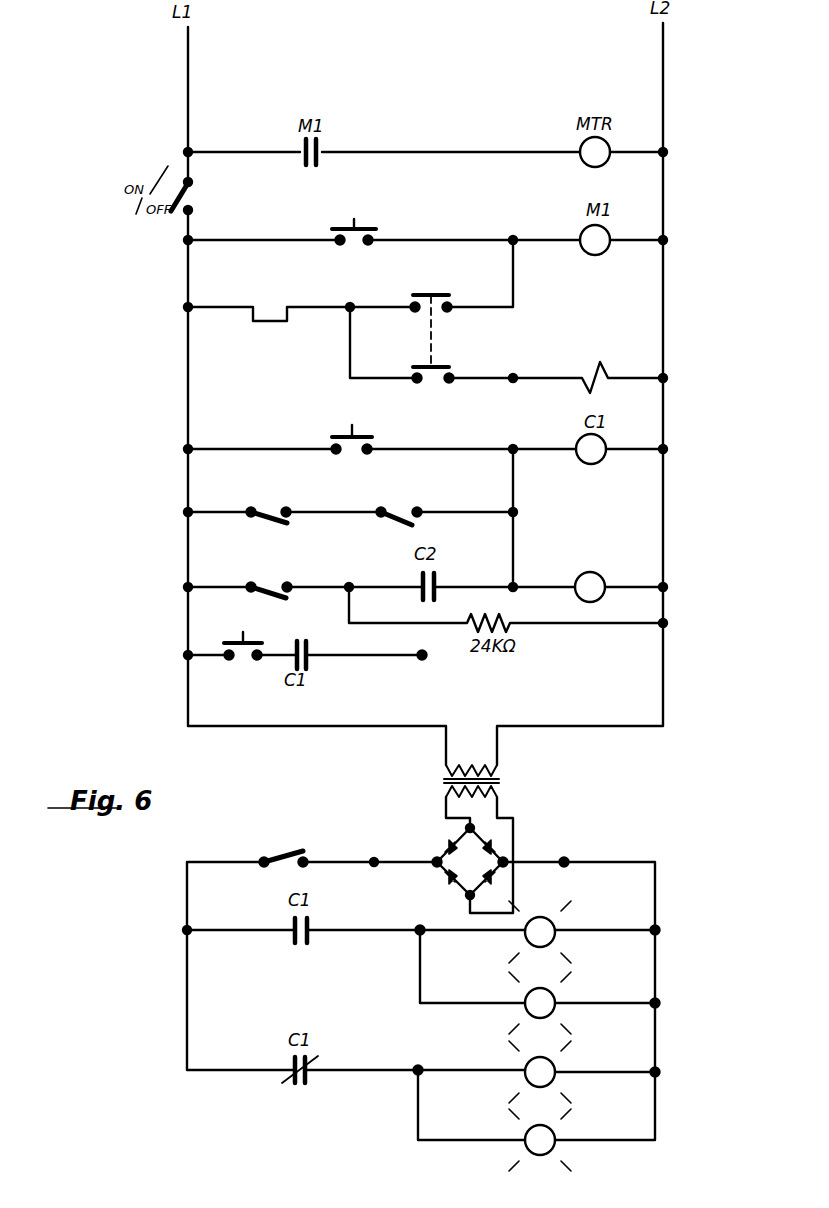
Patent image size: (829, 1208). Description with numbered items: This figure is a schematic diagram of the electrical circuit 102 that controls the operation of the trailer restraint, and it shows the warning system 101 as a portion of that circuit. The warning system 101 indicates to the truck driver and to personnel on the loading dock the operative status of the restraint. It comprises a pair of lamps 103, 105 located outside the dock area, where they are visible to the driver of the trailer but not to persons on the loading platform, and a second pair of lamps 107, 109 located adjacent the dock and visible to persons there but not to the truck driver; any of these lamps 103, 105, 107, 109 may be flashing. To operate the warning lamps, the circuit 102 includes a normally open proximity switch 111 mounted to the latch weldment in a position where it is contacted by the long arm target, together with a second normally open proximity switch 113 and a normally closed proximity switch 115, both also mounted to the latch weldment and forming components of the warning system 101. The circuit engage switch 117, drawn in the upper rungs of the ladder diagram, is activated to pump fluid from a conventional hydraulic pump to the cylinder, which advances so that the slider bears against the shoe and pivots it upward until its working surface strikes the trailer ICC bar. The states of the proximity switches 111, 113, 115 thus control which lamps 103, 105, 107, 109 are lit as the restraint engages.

The warning system 101 is at (687, 1031).
The schematic electrical circuit 102 is at (168, 704).
The lamp 103 is at (544, 917).
The lamp 105 is at (540, 1072).
The lamp 107 is at (540, 1003).
The lamp 109 is at (540, 1140).
The normally open proximity switch 111 is at (265, 536).
The second normally open proximity switch 113 is at (398, 510).
The normally closed proximity switch 115 is at (262, 607).
The circuit engage switch 117 is at (372, 228).